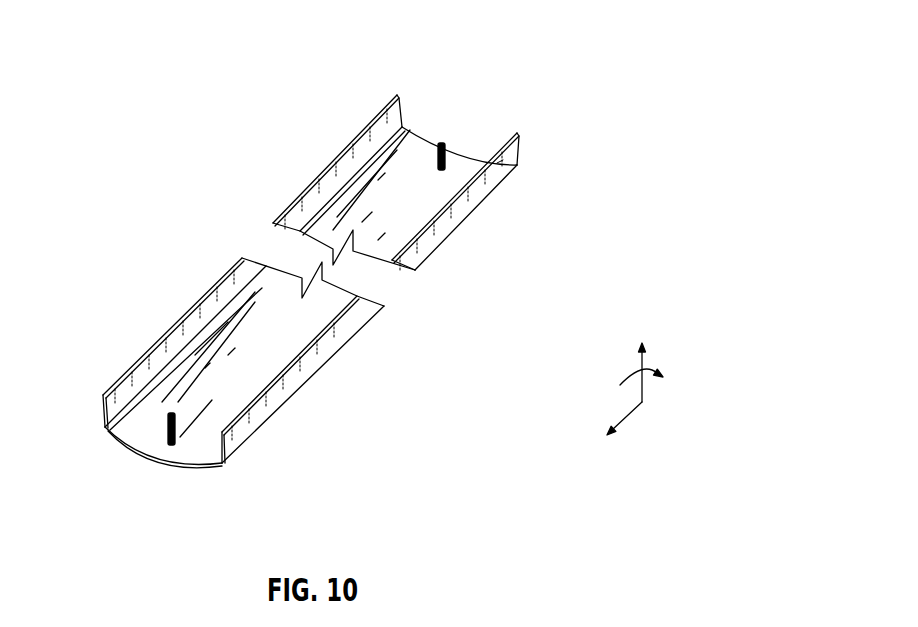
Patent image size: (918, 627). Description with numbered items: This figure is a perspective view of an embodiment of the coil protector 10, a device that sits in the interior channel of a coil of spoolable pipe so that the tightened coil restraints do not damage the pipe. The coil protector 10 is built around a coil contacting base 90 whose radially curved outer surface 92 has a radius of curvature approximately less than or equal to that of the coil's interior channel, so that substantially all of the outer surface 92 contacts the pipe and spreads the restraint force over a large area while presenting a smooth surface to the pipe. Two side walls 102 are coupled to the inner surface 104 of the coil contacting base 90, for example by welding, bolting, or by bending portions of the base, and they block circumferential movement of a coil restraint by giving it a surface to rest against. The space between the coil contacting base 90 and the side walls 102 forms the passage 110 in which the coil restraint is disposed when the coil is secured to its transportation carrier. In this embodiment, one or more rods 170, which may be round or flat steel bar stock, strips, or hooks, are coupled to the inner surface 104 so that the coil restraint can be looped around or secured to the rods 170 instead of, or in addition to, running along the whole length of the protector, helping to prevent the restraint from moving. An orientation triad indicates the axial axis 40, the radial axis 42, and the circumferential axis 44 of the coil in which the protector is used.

The coil protector 10 is at (513, 42).
The passage 110 is at (420, 123).
The coil contacting base 90 is at (196, 455).
The outer surface 92 is at (190, 452).
The side wall 102 is at (197, 300).
The inner surface 104 is at (286, 346).
The rod 170 is at (446, 143).
The axial axis 40 is at (627, 420).
The radial axis 42 is at (643, 385).
The circumferential axis 44 is at (637, 370).